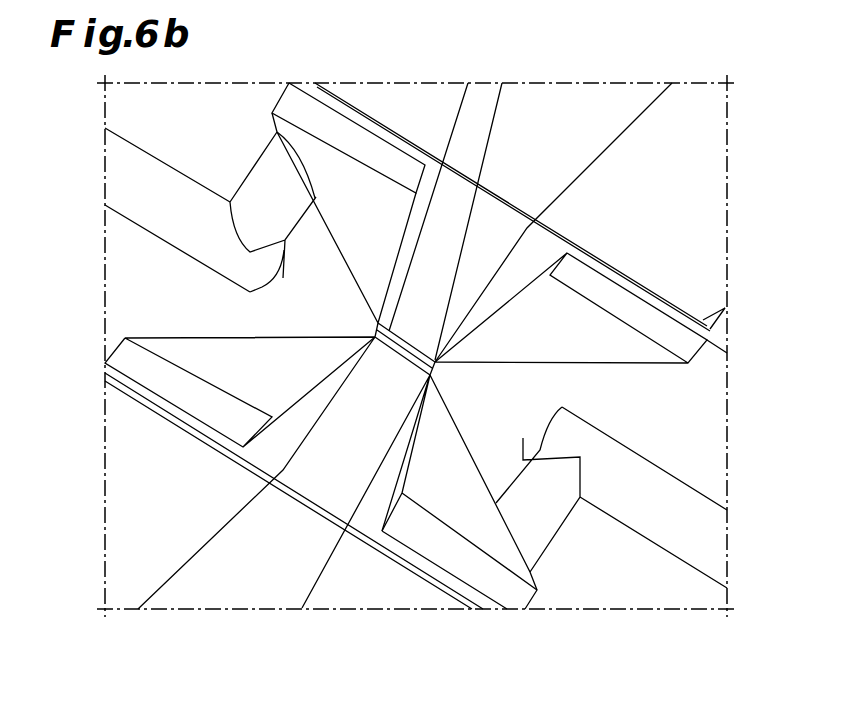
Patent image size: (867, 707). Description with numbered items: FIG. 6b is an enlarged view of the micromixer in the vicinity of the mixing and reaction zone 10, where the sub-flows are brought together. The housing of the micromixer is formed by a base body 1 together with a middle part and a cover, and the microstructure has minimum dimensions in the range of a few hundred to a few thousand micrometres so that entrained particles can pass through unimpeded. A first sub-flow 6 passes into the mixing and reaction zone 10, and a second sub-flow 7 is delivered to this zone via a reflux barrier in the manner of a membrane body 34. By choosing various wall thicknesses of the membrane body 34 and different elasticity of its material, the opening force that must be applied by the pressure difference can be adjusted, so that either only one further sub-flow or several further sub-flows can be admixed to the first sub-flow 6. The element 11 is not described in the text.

The base body 1 is at (645, 407).
The first sub-flow 6 is at (253, 572).
The second sub-flow 7 is at (135, 188).
The mixing and reaction zone 10 is at (427, 303).
The upper rail / plate 11 is at (556, 133).
The membrane body 34 is at (430, 213).